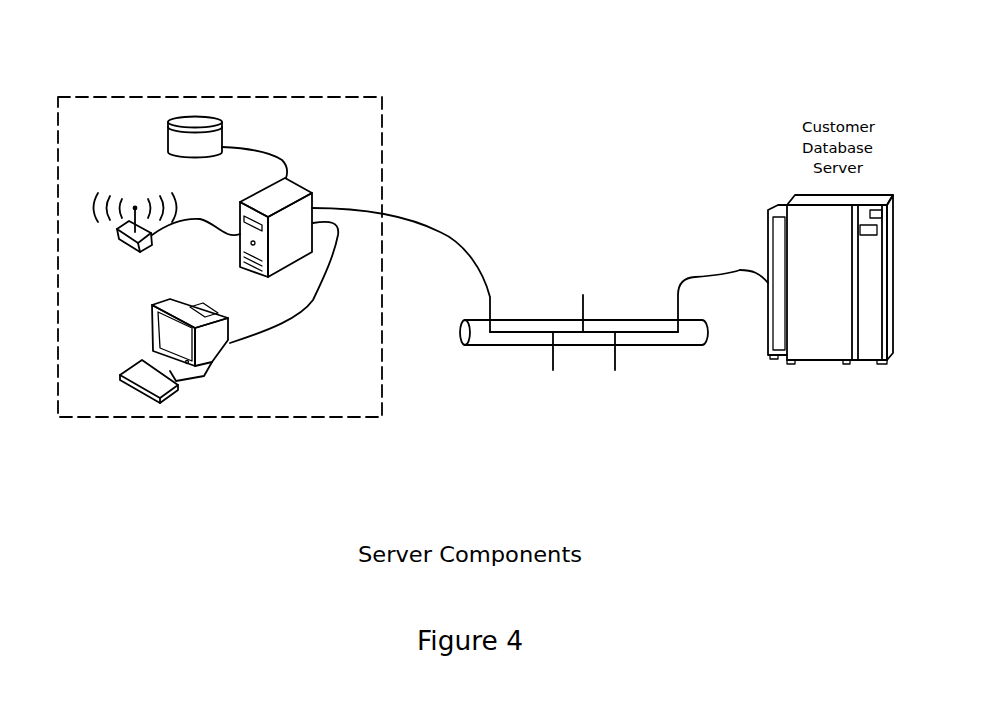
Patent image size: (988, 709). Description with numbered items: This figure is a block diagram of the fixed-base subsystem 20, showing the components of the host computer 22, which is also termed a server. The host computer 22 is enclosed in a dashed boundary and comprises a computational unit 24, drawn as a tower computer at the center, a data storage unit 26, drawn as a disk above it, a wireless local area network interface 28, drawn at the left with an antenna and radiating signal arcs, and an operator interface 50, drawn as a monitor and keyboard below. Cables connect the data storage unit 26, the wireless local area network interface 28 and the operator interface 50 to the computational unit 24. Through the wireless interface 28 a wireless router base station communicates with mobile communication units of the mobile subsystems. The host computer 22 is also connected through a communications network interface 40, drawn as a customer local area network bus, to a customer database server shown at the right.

The fixed-base subsystem 20 is at (494, 55).
The host computer 22 is at (230, 98).
The computational unit 24 is at (360, 259).
The data storage unit 26 is at (209, 148).
The wireless local area network interface 28 is at (161, 231).
The communications network interface 40 is at (600, 299).
The operator interface 50 is at (187, 351).